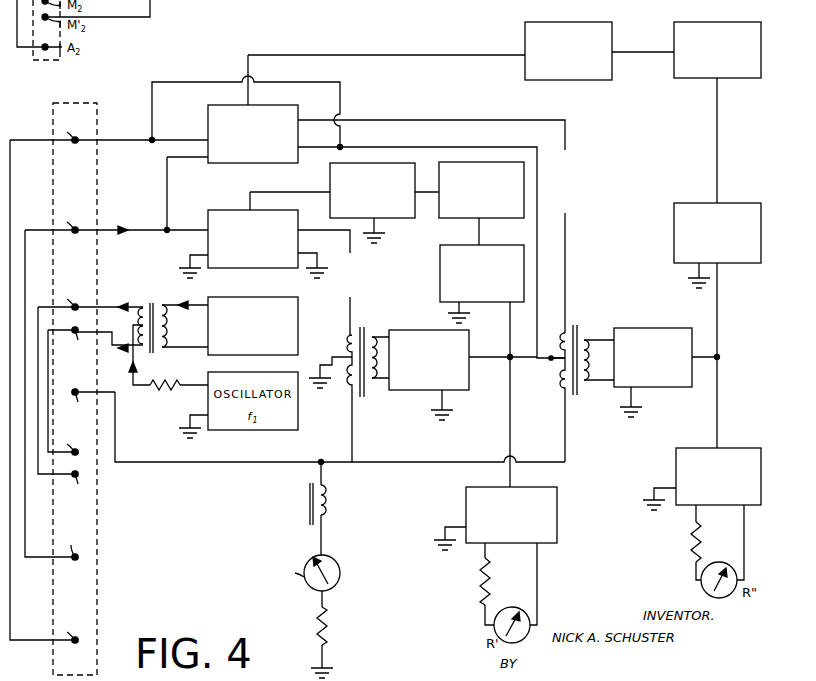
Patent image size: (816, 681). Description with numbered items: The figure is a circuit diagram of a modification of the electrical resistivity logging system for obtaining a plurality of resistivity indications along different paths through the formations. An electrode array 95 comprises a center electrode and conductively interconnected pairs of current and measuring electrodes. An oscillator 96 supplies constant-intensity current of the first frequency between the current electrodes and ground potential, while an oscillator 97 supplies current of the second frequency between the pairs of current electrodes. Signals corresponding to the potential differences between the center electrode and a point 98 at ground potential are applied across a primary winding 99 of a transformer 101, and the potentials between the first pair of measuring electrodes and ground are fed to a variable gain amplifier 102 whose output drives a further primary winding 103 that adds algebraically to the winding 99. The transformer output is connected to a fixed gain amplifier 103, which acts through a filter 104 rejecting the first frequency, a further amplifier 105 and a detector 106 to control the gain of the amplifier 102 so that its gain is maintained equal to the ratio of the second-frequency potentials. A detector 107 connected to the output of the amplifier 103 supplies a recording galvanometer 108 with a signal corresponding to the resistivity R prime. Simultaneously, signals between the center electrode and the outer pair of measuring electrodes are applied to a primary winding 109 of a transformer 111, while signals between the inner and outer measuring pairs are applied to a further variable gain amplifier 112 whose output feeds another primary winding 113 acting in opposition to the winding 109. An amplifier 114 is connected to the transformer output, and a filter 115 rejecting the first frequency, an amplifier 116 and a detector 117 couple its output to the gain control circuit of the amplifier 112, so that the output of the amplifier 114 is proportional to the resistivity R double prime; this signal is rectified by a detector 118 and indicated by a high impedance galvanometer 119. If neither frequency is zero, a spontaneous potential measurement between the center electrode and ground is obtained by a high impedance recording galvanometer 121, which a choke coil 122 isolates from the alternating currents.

The electrode array 95 is at (100, 553).
The oscillator 96 is at (207, 379).
The oscillator 97 is at (301, 305).
The point at ground potential 98 is at (314, 395).
The primary winding 99 is at (350, 385).
The transformer 101 is at (370, 330).
The variable gain amplifier 102 is at (208, 212).
The fixed gain amplifier 103 is at (348, 345).
The filter 104 is at (440, 275).
The amplifier 105 is at (435, 218).
The detector 106 is at (330, 183).
The detector 107 is at (559, 516).
The recording galvanometer 108 is at (495, 637).
The primary winding 109 is at (564, 389).
The transformer 111 is at (578, 393).
The variable gain amplifier 112 is at (208, 118).
The primary winding 113 is at (544, 352).
The amplifier 114 is at (646, 328).
The filter 115 is at (674, 230).
The amplifier 116 is at (718, 21).
The detector 117 is at (576, 20).
The detector 118 is at (676, 468).
The high impedance galvanometer 119 is at (695, 570).
The high impedance recording galvanometer 121 is at (341, 570).
The choke coil 122 is at (330, 510).